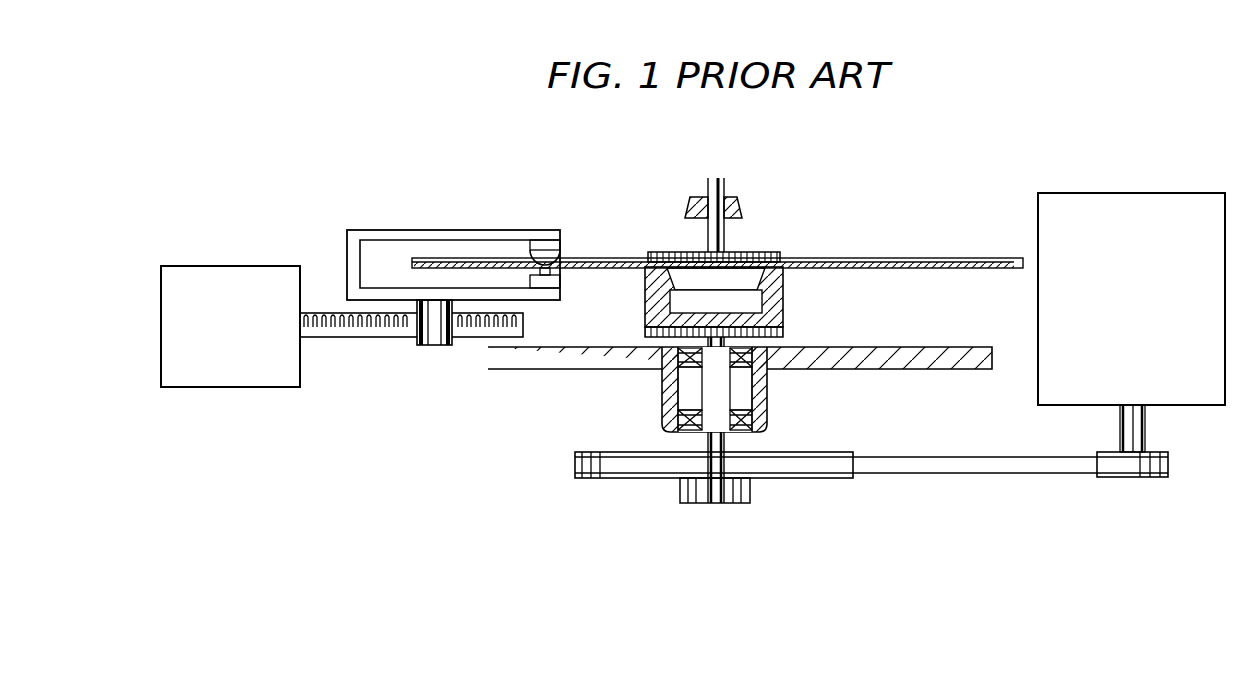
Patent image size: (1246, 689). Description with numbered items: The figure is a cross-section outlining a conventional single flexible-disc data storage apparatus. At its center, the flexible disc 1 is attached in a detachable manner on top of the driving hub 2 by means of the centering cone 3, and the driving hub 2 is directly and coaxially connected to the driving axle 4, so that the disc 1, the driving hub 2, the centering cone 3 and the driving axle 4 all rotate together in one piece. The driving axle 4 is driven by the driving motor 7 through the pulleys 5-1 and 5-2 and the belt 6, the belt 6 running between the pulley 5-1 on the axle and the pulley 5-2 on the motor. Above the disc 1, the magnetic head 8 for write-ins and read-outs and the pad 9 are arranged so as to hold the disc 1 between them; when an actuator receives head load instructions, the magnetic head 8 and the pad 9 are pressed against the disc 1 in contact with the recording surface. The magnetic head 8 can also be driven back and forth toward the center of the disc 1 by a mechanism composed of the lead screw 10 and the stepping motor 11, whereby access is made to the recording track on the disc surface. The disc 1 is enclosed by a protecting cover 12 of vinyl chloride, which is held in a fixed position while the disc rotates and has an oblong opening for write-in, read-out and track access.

The flexible disc 1 is at (860, 256).
The protecting cover 12 is at (978, 256).
The driving hub 2 is at (786, 291).
The centering cone 3 is at (766, 258).
The driving axle 4 is at (700, 398).
The pulley 5-1 is at (808, 480).
The pulley 5-2 is at (1100, 478).
The belt 6 is at (955, 476).
The driving motor 7 is at (1110, 201).
The magnetic head 8 is at (544, 247).
The pad 9 is at (548, 278).
The lead screw 10 is at (356, 340).
The stepping motor 11 is at (271, 276).